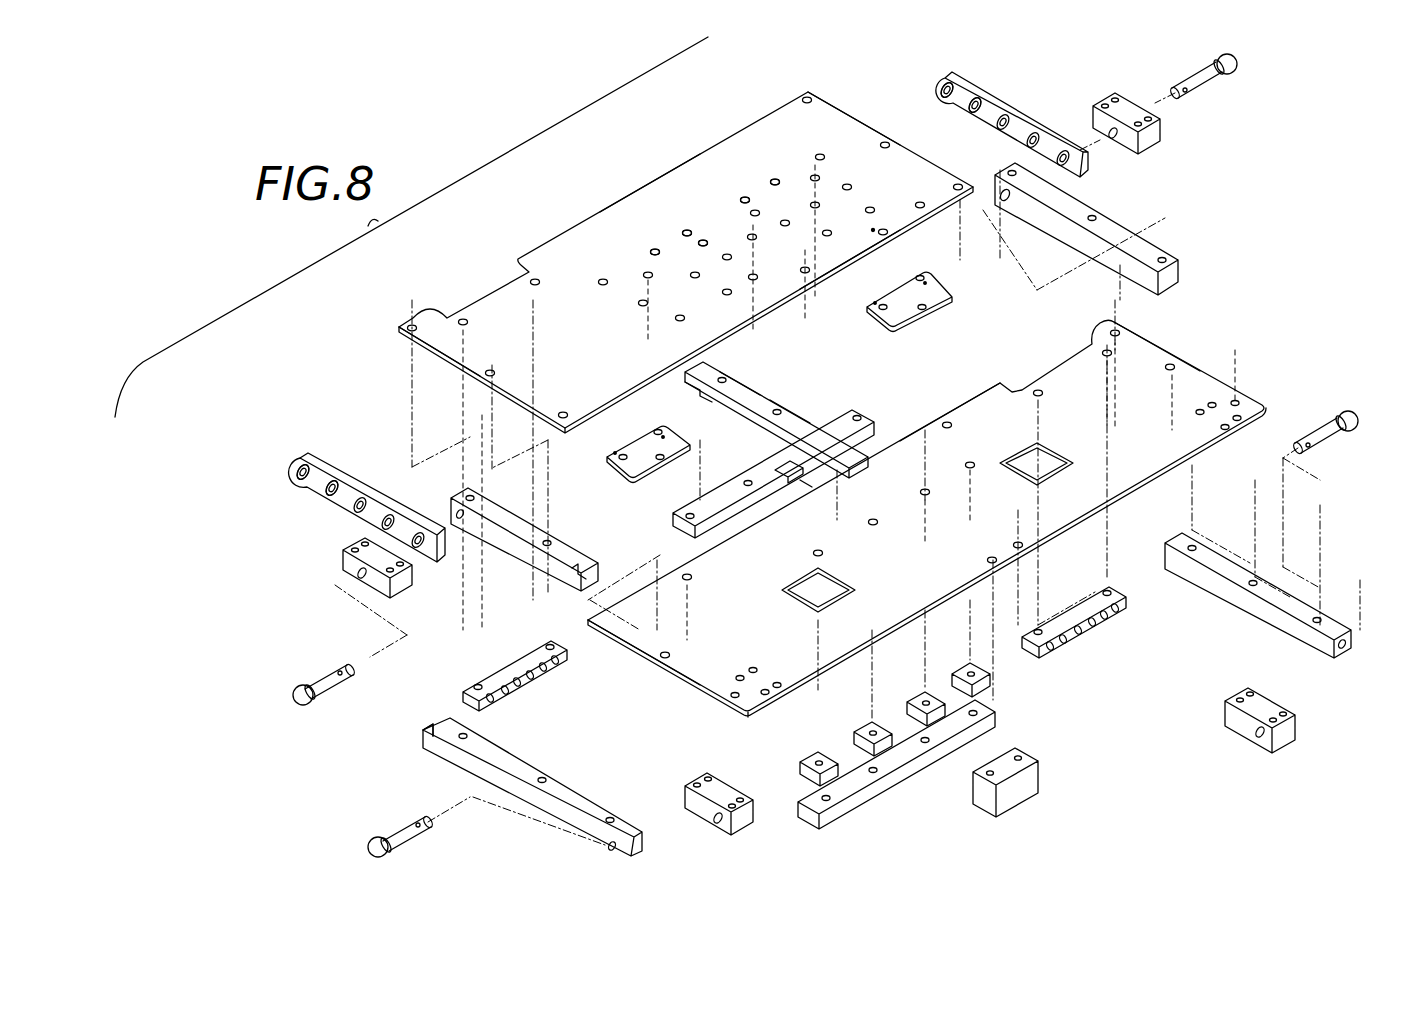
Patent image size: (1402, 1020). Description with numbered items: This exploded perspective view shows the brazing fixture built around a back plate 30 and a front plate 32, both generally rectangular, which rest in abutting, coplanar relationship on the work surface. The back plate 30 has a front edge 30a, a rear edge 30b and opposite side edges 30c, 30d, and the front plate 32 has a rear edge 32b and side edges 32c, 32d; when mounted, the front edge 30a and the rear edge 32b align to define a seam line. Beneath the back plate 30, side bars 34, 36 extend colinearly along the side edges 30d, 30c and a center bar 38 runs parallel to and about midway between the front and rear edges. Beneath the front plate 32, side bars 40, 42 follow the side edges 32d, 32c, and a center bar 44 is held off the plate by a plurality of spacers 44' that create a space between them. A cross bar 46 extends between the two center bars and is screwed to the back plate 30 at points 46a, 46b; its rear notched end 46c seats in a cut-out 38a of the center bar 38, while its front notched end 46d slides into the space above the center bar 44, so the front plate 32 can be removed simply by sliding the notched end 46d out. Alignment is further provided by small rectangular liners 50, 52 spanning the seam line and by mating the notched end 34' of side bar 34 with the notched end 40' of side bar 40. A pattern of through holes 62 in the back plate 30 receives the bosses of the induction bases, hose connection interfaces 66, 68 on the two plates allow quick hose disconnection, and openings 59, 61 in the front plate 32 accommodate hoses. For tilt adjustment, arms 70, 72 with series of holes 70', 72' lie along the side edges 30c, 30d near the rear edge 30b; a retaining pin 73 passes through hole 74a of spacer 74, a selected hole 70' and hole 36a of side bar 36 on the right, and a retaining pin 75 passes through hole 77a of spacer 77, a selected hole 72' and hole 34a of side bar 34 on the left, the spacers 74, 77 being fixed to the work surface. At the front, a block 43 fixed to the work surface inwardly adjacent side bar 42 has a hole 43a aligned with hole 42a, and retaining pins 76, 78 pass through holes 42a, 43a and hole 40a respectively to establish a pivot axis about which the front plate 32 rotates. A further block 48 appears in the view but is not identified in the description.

The back plate 30 is at (822, 120).
The front edge of back plate 30a is at (835, 330).
The rear edge of back plate 30b is at (615, 215).
The side edge of back plate 30c is at (862, 117).
The side edge of back plate 30d is at (440, 362).
The front plate 32 is at (912, 572).
The rear edge of front plate 32b is at (967, 388).
The side edge of front plate 32c is at (1160, 345).
The side edge of front plate 32d is at (665, 675).
The side bar 34 is at (524, 555).
The notched end of side bar 34 34' is at (594, 542).
The hole in side bar 34 34a is at (461, 520).
The side bar 36 is at (1125, 225).
The hole in side bar 36 36a is at (1008, 201).
The center bar 38 is at (865, 412).
The cut-out 38a is at (805, 482).
The side bar 40 is at (532, 787).
The notched end of side bar 40 40' is at (413, 698).
The hole in side bar 40 40a is at (610, 850).
The side bar 42 is at (1215, 585).
The hole in side bar 42 42a is at (1336, 643).
The block 43 is at (1232, 710).
The hole in block 43 43a is at (1260, 740).
The center bar 44 is at (896, 776).
The spacers 44' is at (895, 700).
The cross bar 46 is at (810, 425).
The mounting point 46a is at (740, 368).
The mounting point 46b is at (790, 398).
The rear notched end of cross bar 46c is at (693, 388).
The front notched end of cross bar 46d is at (842, 472).
The block 48 is at (1020, 795).
The liner 50 is at (632, 462).
The liner 52 is at (940, 292).
The opening 59 is at (790, 602).
The opening 61 is at (1055, 447).
The through holes 62 is at (772, 180).
The hose connection interface 66 is at (1085, 612).
The hose connection interface 68 is at (555, 668).
The adjustable arm 70 is at (1012, 115).
The holes in arm 70 70' is at (989, 73).
The adjustable arm 72 is at (367, 481).
The holes in arm 72 72' is at (279, 487).
The retaining pin 73 is at (1195, 88).
The spacer 74 is at (1130, 112).
The hole in spacer 74 74a is at (1115, 138).
The retaining pin 75 is at (330, 690).
The retaining pin 76 is at (1320, 430).
The spacer 77 is at (345, 562).
The hole in spacer 77 77a is at (362, 580).
The retaining pin 78 is at (400, 835).